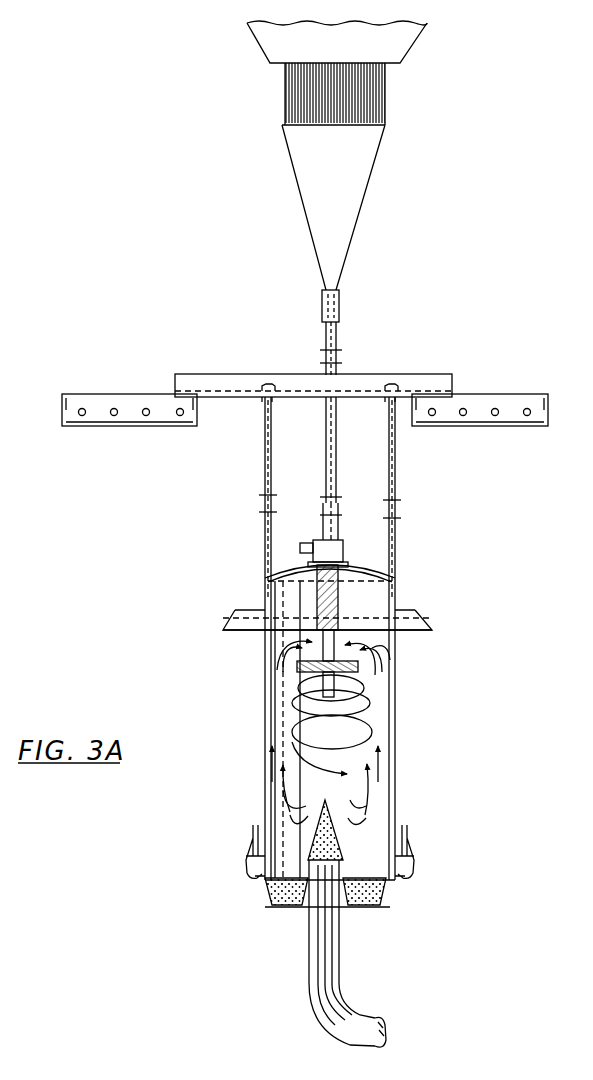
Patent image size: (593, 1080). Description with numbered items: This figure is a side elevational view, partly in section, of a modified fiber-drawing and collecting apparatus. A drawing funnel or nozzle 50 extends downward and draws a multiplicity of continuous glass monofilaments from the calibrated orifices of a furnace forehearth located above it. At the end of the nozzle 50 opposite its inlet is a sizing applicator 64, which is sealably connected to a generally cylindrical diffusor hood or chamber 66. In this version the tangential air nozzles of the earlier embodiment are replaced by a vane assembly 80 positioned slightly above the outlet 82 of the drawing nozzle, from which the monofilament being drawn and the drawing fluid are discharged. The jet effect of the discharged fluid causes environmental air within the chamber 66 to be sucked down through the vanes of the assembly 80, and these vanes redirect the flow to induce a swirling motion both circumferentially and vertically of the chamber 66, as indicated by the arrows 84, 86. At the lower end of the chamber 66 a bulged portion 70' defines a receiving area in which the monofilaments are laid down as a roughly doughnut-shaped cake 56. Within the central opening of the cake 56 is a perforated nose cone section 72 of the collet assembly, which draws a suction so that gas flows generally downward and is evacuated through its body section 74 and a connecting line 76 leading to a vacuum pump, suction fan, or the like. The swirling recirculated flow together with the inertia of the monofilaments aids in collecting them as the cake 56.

The drawing nozzle 50 is at (337, 448).
The sizing applicator 64 is at (340, 552).
The diffusor hood 66 is at (393, 731).
The vane assembly 80 is at (358, 672).
The outlet 82 is at (331, 694).
The arrows 84 is at (325, 750).
The arrows 86 is at (376, 648).
The nose cone section 72 is at (336, 843).
The cake 56 is at (368, 900).
The bulged portion 70' is at (335, 865).
The body section 74 is at (318, 940).
The connecting line 76 is at (363, 1028).